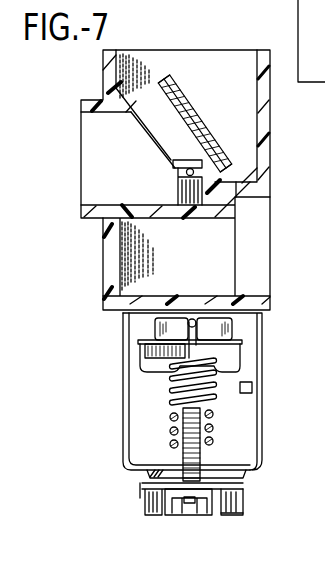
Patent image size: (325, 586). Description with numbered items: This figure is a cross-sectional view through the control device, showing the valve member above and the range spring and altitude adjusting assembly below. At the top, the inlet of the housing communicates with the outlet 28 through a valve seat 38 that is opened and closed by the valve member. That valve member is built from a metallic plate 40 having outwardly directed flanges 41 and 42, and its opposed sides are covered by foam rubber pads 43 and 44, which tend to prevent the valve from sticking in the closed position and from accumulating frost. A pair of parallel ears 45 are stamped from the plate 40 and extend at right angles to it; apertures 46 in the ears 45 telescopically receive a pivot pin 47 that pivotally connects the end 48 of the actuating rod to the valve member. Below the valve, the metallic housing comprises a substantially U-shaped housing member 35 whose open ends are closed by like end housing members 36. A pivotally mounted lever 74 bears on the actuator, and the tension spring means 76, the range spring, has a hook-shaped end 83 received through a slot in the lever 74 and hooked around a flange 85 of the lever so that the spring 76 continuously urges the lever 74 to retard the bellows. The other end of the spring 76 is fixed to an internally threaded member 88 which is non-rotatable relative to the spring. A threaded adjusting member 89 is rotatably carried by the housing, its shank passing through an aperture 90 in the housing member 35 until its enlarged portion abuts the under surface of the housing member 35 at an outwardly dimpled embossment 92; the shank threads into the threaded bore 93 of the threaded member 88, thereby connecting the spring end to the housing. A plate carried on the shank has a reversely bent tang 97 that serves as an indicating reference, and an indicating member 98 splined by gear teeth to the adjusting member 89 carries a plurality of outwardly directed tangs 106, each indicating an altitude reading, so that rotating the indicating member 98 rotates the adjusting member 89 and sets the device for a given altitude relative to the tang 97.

The outlet 28 is at (107, 172).
The valve seat 38 is at (148, 95).
The metallic plate 40 is at (174, 93).
The outwardly directed flange 41 is at (172, 82).
The outwardly directed flange 42 is at (232, 177).
The foam rubber pad 43 is at (202, 123).
The foam rubber pad 44 is at (180, 118).
The ears 45 is at (202, 164).
The apertures 46 is at (220, 193).
The pivot pin 47 is at (185, 174).
The end of actuating rod 48 is at (190, 205).
The hook-shaped end 83 is at (195, 320).
The flange 85 is at (262, 328).
The lever 74 is at (142, 342).
The U-shaped housing member 35 is at (263, 367).
The housing members 36 is at (238, 415).
The tension spring means 76 is at (170, 413).
The threaded bore 93 is at (215, 438).
The threaded adjusting member 89 is at (177, 458).
The internally threaded member 88 is at (200, 450).
The outwardly dimpled embossment 92 is at (150, 478).
The aperture 90 is at (243, 480).
The reversely bent tang 97 is at (138, 495).
The indicating member 98 is at (243, 490).
The outwardly directed tangs 106 is at (242, 513).